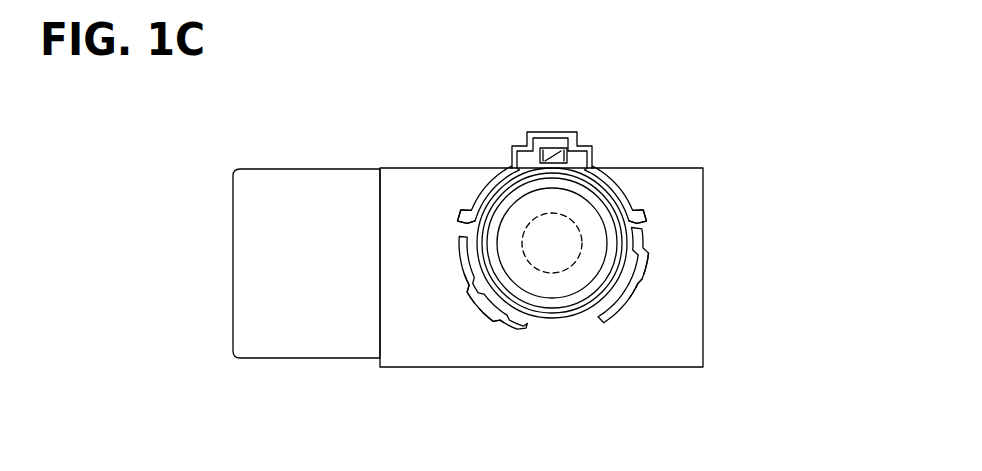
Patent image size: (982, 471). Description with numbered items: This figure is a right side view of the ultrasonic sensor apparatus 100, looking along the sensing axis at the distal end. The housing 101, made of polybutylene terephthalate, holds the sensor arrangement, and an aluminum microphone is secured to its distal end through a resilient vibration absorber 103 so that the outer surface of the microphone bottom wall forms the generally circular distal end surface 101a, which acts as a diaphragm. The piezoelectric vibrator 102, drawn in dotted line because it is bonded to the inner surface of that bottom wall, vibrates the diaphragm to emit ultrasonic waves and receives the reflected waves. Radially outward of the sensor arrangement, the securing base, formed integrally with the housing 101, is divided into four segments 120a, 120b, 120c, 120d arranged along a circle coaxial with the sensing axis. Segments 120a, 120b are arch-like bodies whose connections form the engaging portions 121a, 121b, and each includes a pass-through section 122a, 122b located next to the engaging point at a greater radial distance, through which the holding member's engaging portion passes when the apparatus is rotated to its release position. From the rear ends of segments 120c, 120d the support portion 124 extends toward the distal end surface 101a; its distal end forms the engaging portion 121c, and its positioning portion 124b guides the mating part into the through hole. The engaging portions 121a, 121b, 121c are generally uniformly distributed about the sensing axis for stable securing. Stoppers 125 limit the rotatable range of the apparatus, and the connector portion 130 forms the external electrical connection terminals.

The ultrasonic sensor apparatus 100 is at (757, 112).
The housing 101 is at (405, 208).
The distal end surface 101a is at (572, 203).
The piezoelectric vibrator 102 is at (565, 272).
The vibration absorber 103 is at (551, 302).
The segment 120a is at (502, 328).
The segment 120b is at (648, 246).
The segment 120c is at (492, 170).
The segment 120d is at (633, 190).
The engaging portion 121a is at (466, 288).
The engaging portion 121b is at (640, 282).
The engaging portion 121c is at (549, 150).
The pass-through section 122a is at (482, 311).
The pass-through section 122b is at (641, 264).
The support portion 124 is at (560, 131).
The positioning portion 124b is at (578, 144).
The stopper 125 is at (465, 200).
The connector portion 130 is at (263, 252).